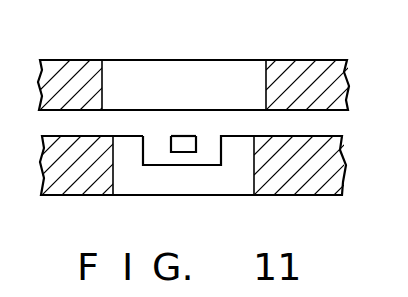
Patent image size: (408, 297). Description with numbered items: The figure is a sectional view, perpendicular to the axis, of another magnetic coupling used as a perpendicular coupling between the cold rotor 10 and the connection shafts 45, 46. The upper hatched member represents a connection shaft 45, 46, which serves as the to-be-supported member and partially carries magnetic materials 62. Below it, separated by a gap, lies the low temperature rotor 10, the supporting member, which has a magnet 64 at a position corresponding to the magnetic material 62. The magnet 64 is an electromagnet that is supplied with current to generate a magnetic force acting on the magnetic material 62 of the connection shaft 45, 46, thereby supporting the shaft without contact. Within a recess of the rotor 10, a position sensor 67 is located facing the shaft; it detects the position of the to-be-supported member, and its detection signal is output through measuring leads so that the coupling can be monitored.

The cold rotor 10 is at (216, 175).
The connection shaft 45 is at (207, 67).
The connection shaft 46 is at (207, 67).
The magnetic material 62 is at (98, 78).
The magnet 64 is at (137, 140).
The position sensor 67 is at (196, 132).